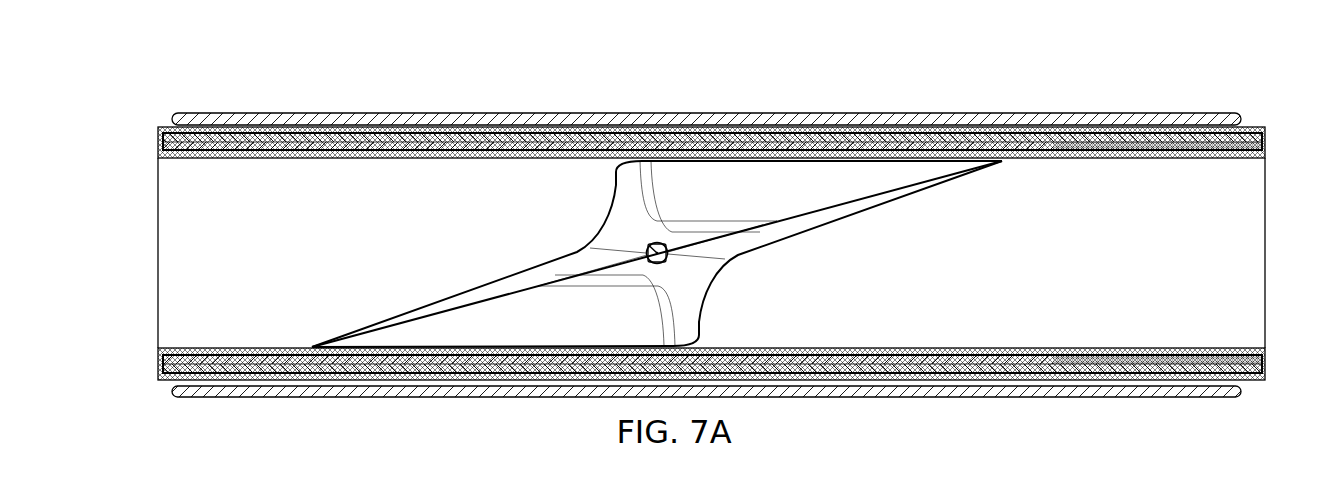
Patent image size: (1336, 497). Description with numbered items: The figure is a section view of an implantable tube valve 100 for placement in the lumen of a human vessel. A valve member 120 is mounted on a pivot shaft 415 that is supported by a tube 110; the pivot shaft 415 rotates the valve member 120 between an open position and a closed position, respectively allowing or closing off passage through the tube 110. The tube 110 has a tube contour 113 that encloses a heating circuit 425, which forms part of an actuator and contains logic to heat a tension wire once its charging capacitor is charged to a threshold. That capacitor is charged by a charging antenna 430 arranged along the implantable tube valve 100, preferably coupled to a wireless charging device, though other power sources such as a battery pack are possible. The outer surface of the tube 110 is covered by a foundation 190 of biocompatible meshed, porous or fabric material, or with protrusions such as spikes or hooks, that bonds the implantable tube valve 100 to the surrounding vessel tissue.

The implantable tube valve 100 is at (122, 205).
The tube 110 is at (205, 297).
The tube contour 113 is at (153, 123).
The valve member 120 is at (828, 192).
The foundation 190 is at (1033, 117).
The pivot shaft 415 is at (647, 249).
The heating circuit 425 is at (1148, 146).
The charging antenna 430 is at (267, 130).